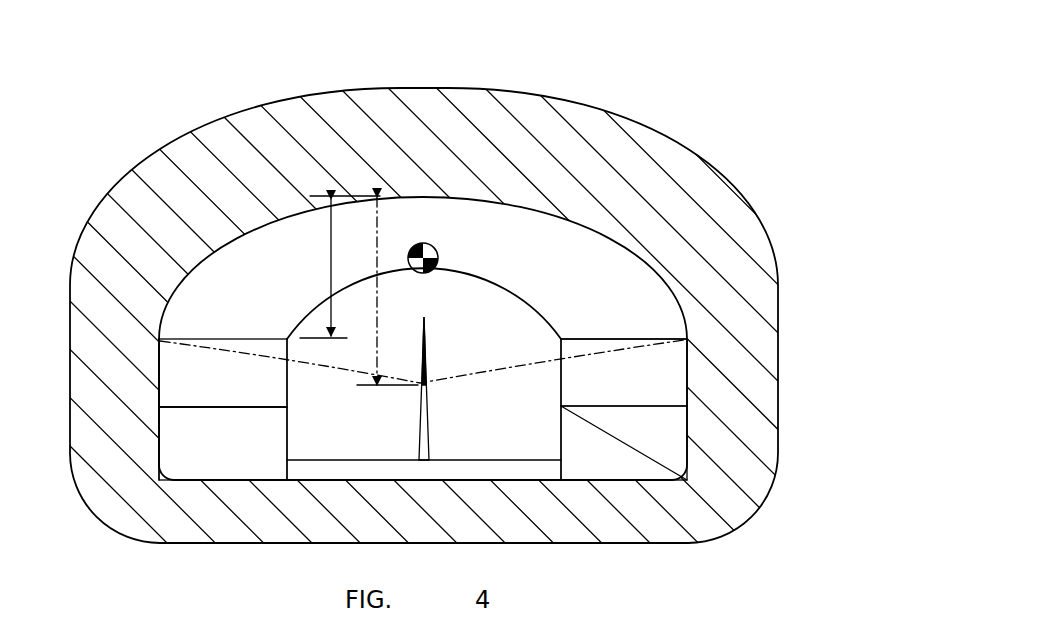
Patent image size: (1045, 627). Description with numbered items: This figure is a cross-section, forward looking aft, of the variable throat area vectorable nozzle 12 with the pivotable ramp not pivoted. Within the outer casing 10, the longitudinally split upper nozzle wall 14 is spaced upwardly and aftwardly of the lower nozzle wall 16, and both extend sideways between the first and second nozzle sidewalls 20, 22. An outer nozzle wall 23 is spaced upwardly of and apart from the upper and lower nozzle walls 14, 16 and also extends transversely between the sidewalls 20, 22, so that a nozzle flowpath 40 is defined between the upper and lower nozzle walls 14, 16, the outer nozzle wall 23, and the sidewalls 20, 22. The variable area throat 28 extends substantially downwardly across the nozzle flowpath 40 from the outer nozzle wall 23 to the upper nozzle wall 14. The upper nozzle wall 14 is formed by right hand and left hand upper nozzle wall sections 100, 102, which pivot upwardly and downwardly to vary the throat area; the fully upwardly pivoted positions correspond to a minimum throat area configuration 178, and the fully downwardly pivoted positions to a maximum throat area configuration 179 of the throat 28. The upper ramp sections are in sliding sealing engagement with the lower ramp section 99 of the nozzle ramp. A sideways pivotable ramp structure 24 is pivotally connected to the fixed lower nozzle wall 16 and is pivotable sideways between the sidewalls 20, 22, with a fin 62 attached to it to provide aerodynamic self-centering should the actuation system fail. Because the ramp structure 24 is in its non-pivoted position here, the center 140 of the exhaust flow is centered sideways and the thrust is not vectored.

The outer casing 10 is at (478, 90).
The variable throat area vectorable nozzle 12 is at (693, 100).
The upper nozzle wall 14 is at (225, 338).
The lower nozzle wall 16 is at (210, 480).
The first nozzle sidewall 20 is at (687, 395).
The second nozzle sidewall 22 is at (160, 378).
The outer nozzle wall 23 is at (427, 200).
The sideways pivotable ramp structure 24 is at (478, 458).
The variable area throat 28 is at (380, 288).
The nozzle flowpath 40 is at (294, 288).
The fin 62 is at (427, 362).
The lower ramp section 99 is at (252, 453).
The right hand upper nozzle wall section 100 is at (530, 303).
The left hand upper nozzle wall section 102 is at (273, 338).
The center of the exhaust flow 140 is at (437, 255).
The minimum throat area configuration 178 is at (230, 343).
The maximum throat area configuration 179 is at (580, 347).